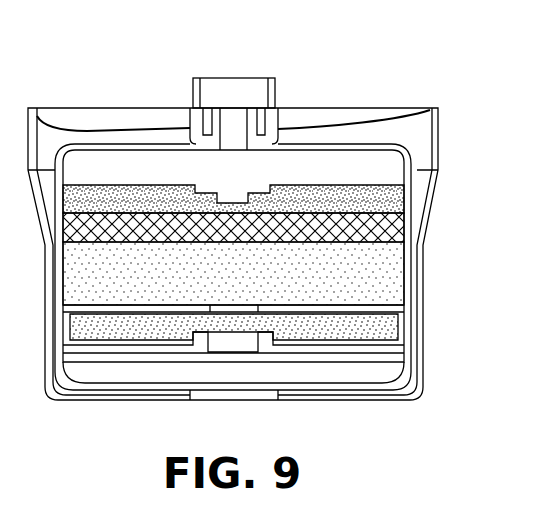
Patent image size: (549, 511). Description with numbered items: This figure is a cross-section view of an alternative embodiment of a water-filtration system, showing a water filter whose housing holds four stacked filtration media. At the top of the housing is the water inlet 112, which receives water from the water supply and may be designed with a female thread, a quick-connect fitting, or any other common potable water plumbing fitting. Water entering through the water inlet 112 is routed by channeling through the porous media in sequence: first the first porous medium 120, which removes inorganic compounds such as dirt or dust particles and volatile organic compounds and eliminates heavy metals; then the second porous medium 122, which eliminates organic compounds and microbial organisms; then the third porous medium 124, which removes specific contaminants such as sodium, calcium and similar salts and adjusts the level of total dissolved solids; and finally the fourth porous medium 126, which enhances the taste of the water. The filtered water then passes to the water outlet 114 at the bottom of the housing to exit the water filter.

The water inlet 112 is at (253, 77).
The water outlet 114 is at (258, 396).
The first porous medium 120 is at (390, 205).
The second porous medium 122 is at (393, 230).
The third porous medium 124 is at (390, 288).
The fourth porous medium 126 is at (387, 325).